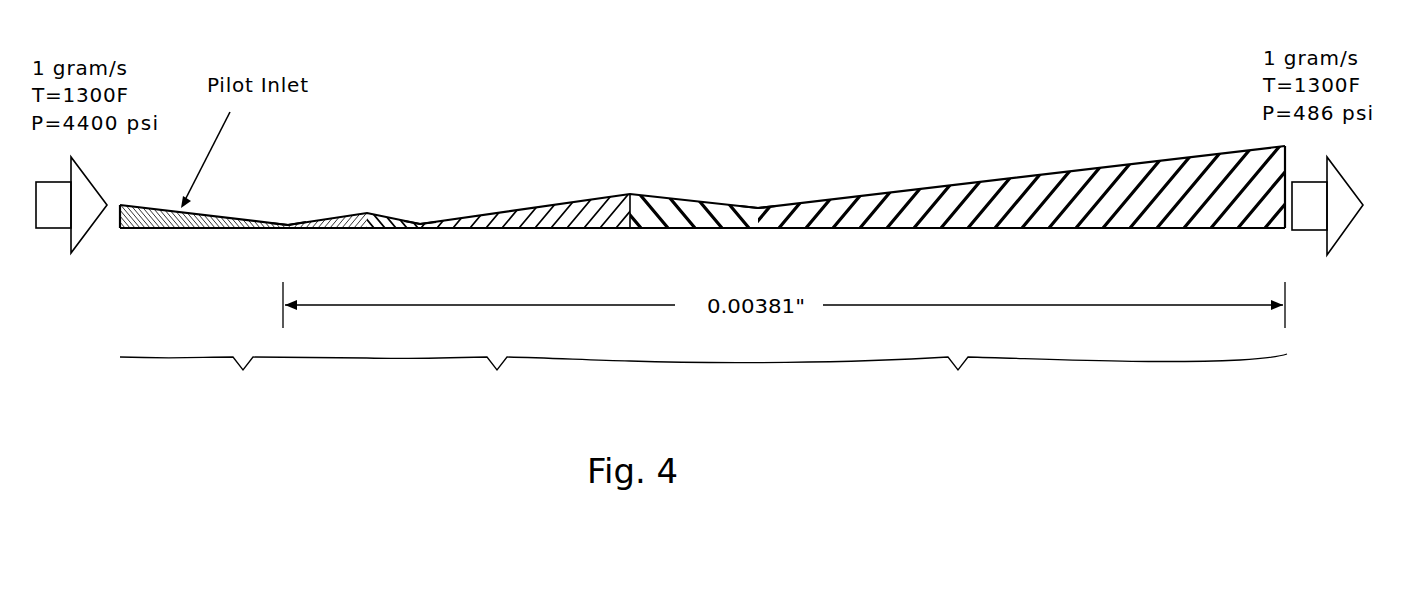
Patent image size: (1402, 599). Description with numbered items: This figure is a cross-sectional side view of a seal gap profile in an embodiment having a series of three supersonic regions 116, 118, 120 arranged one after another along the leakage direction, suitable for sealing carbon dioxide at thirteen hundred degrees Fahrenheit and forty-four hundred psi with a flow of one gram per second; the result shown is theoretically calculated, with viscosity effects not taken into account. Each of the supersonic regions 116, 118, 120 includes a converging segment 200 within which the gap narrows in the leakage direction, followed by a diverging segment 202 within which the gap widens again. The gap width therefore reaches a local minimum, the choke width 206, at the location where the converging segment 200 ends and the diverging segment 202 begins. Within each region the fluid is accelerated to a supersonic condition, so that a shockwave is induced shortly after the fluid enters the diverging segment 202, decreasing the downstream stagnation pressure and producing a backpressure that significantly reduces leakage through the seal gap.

The first supersonic region 116 is at (243, 382).
The second supersonic region 118 is at (498, 382).
The third supersonic region 120 is at (958, 380).
The converging segment 200 is at (222, 215).
The diverging segment 202 is at (338, 228).
The choke width 206 is at (292, 221).